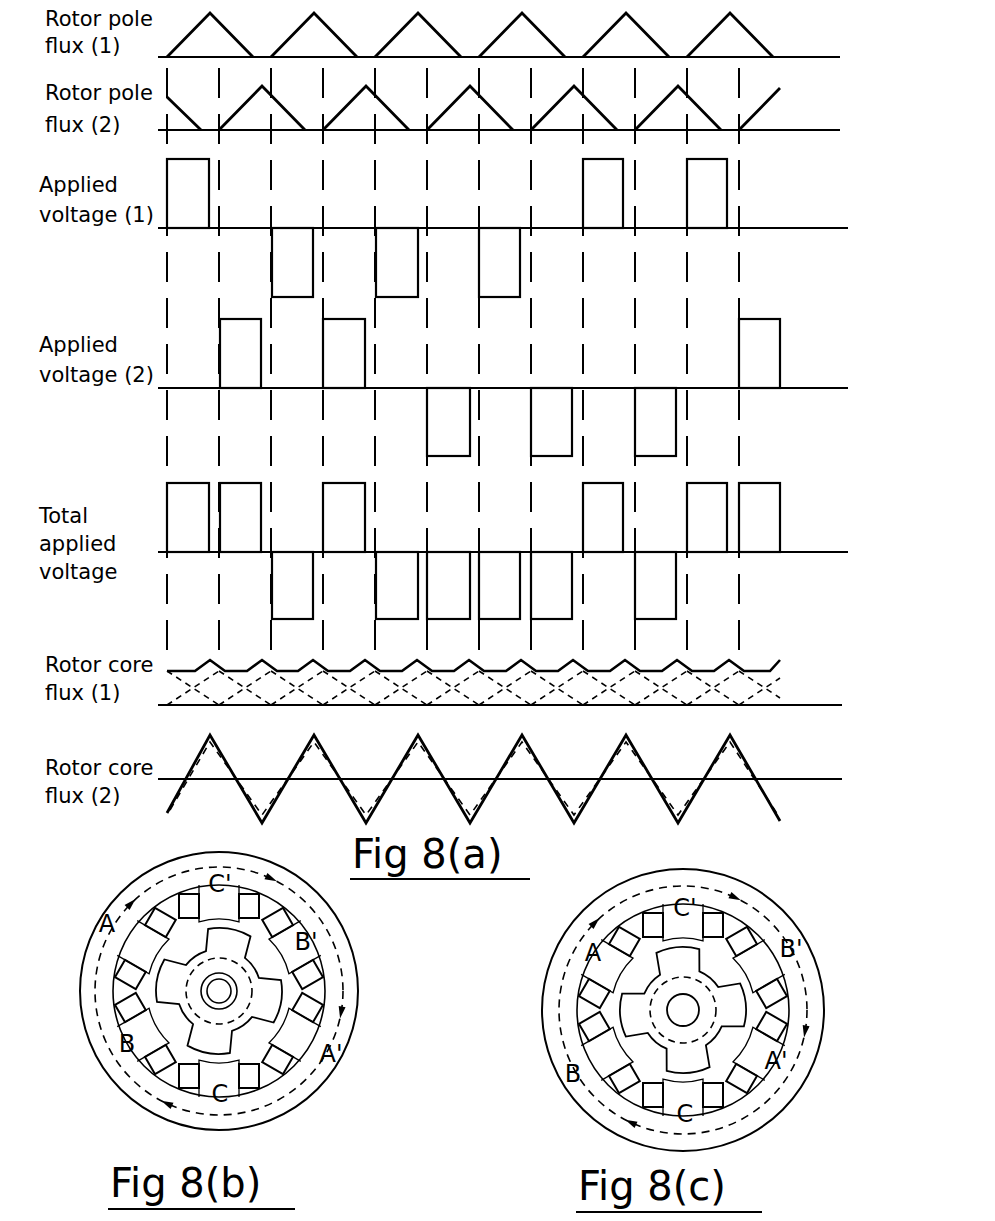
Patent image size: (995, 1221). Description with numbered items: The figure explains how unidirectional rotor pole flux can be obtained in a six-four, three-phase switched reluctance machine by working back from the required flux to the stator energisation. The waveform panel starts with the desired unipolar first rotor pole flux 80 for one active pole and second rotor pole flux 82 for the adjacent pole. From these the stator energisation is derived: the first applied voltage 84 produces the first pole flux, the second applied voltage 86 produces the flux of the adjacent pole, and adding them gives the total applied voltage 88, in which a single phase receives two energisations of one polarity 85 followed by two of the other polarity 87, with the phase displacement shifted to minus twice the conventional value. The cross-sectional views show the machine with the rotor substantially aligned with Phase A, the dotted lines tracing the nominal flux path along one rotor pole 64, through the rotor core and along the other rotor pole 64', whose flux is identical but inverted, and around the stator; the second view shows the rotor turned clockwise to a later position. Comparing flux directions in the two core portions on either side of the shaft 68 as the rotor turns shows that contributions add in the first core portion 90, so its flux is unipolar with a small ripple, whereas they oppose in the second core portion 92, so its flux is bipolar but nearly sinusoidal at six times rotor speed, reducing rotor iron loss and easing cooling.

In FIG. 8A, the rotor pole flux (1) 80 is at (776, 32).
In FIG. 8B, the rotor pole flux (1) 80 is at (160, 962).
In FIG. 8C, the rotor pole flux (1) 80 is at (653, 953).
In FIG. 8A, the rotor pole flux (2) 82 is at (783, 110).
In FIG. 8B, the rotor pole flux (2) 82 is at (167, 1020).
In FIG. 8C, the rotor pole flux (2) 82 is at (620, 1027).
In FIG. 8A, the applied voltage (1) 84 is at (756, 190).
In FIG. 8A, the energisations of one polarity 85 is at (327, 476).
In FIG. 8A, the applied voltage (2) 86 is at (786, 400).
In FIG. 8A, the energisations of the other polarity 87 is at (652, 570).
In FIG. 8A, the total applied voltage 88 is at (520, 525).
In FIG. 8A, the rotor core flux (1) 90 is at (785, 683).
In FIG. 8B, the rotor core flux (1) 90 is at (207, 957).
In FIG. 8C, the rotor core flux (1) 90 is at (700, 965).
In FIG. 8A, the rotor core flux (2) 92 is at (778, 767).
In FIG. 8B, the rotor core flux (2) 92 is at (184, 998).
In FIG. 8C, the rotor core flux (2) 92 is at (650, 1003).
In FIG. 8B, the rotor pole 64 is at (131, 941).
In FIG. 8C, the rotor pole 64 is at (605, 957).
In FIG. 8B, the rotor pole 64' is at (267, 1025).
In FIG. 8C, the rotor pole 64' is at (751, 1021).
In FIG. 8B, the shaft 68 is at (237, 997).